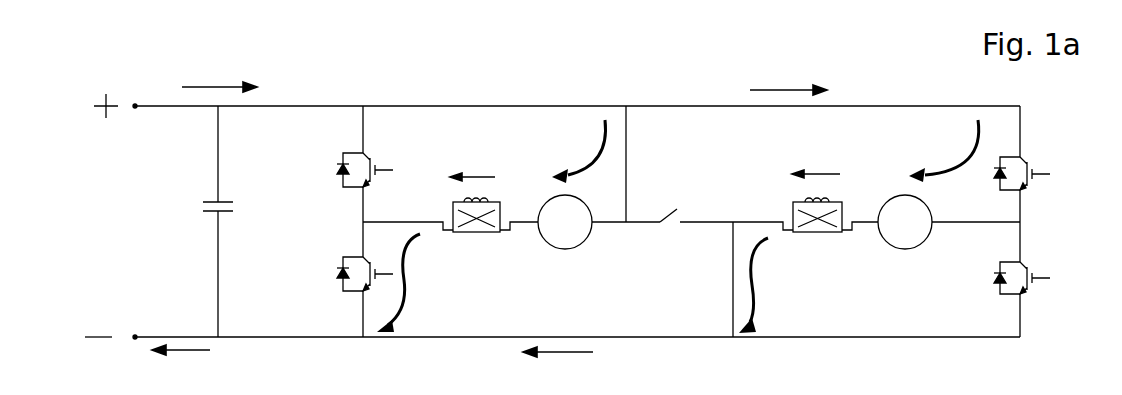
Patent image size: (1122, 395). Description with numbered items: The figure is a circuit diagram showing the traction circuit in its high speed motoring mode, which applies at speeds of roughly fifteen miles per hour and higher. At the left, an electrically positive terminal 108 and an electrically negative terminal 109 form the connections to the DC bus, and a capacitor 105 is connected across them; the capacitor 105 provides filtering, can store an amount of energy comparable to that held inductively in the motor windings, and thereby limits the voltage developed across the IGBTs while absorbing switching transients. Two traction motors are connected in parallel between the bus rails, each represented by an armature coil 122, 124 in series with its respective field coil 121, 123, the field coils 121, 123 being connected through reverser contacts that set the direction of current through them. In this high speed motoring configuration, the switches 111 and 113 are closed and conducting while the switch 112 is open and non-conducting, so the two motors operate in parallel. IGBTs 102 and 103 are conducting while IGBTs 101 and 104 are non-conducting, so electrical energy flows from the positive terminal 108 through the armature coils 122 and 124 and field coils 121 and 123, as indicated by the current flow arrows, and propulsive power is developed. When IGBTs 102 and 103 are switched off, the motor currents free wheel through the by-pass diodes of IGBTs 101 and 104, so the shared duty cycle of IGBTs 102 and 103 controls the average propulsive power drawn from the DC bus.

The IGBT 101 is at (336, 183).
The IGBT 102 is at (328, 287).
The IGBT 103 is at (1032, 157).
The IGBT 104 is at (1032, 264).
The capacitor 105 is at (207, 218).
The electrically positive terminal 108 is at (123, 120).
The electrically negative terminal 109 is at (122, 330).
The switch 111 is at (632, 173).
The switch 112 is at (673, 233).
The switch 113 is at (723, 282).
The field coil 121 is at (479, 234).
The armature coil 122 is at (564, 252).
The field coil 123 is at (818, 238).
The armature coil 124 is at (903, 253).